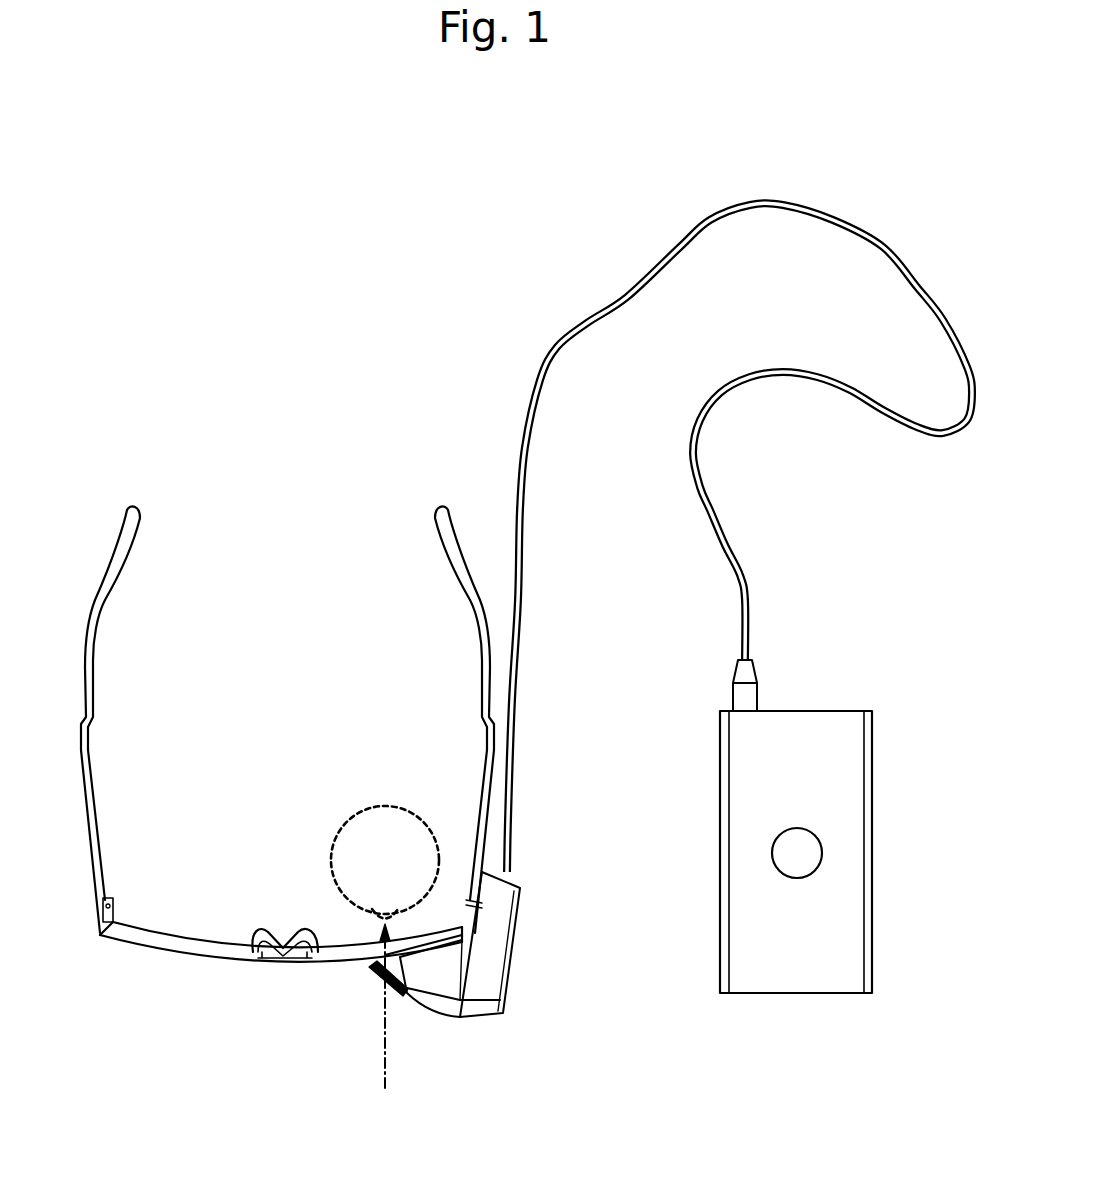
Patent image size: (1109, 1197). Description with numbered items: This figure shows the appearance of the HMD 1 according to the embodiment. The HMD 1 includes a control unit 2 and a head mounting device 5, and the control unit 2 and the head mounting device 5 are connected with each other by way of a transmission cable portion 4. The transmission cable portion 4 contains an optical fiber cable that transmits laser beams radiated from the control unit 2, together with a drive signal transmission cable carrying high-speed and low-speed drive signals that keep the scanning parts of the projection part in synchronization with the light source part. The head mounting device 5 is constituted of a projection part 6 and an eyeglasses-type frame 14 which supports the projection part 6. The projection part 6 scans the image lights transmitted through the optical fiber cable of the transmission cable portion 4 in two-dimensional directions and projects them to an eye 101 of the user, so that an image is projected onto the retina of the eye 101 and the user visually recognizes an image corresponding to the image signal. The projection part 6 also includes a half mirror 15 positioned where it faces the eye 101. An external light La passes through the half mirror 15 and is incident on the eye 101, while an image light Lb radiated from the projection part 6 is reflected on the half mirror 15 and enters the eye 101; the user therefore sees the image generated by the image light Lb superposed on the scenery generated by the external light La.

The HMD 1 is at (438, 233).
The control unit 2 is at (864, 780).
The transmission cable portion 4 is at (792, 212).
The head mounting device 5 is at (250, 467).
The projection part 6 is at (523, 888).
The eyeglasses-type frame 14 is at (192, 958).
The half mirror 15 is at (387, 977).
The eye 101 is at (368, 808).
The external light La is at (383, 1068).
The image light Lb is at (397, 985).